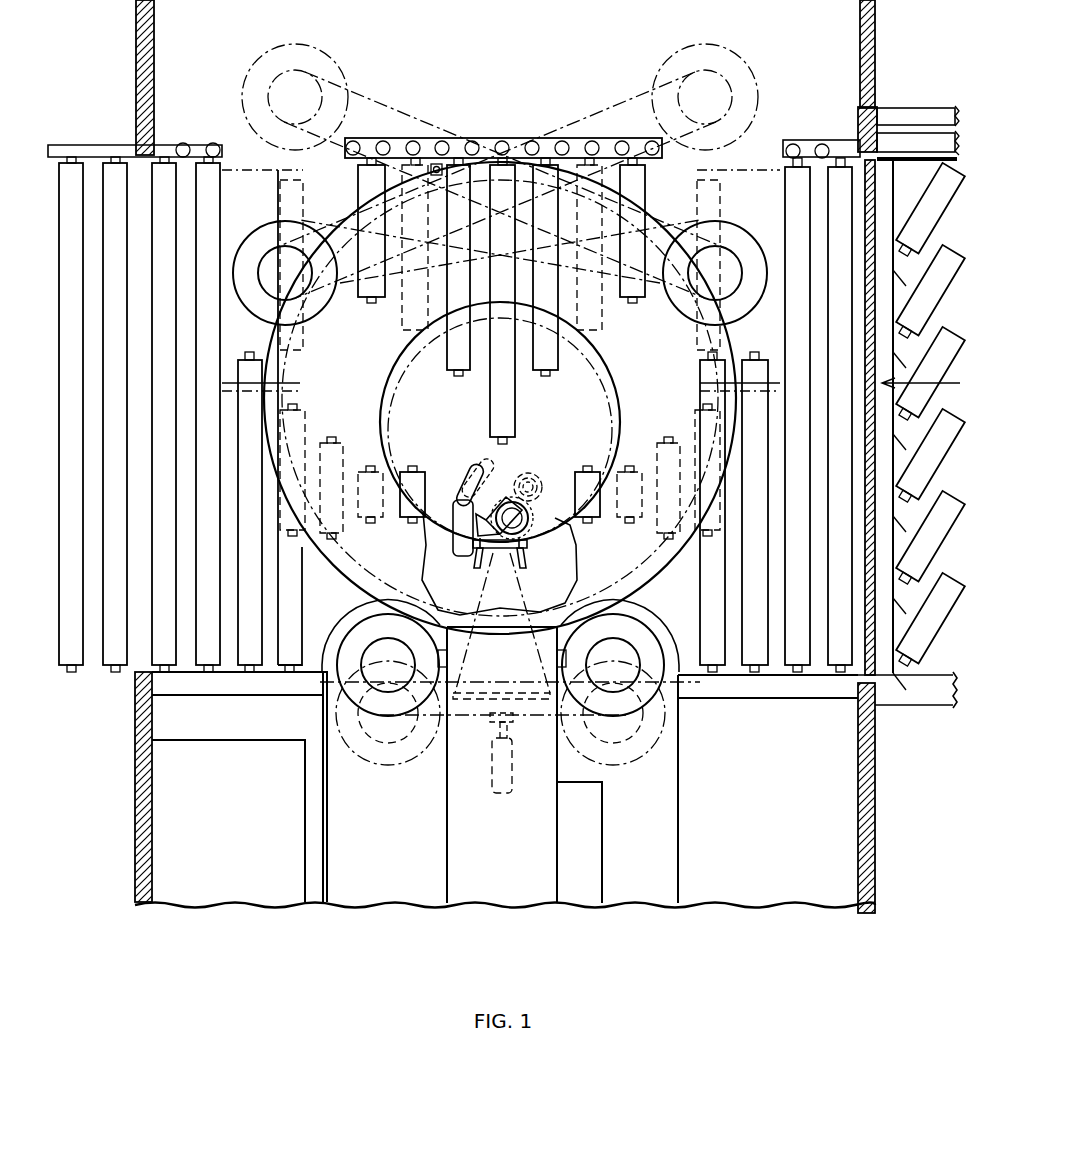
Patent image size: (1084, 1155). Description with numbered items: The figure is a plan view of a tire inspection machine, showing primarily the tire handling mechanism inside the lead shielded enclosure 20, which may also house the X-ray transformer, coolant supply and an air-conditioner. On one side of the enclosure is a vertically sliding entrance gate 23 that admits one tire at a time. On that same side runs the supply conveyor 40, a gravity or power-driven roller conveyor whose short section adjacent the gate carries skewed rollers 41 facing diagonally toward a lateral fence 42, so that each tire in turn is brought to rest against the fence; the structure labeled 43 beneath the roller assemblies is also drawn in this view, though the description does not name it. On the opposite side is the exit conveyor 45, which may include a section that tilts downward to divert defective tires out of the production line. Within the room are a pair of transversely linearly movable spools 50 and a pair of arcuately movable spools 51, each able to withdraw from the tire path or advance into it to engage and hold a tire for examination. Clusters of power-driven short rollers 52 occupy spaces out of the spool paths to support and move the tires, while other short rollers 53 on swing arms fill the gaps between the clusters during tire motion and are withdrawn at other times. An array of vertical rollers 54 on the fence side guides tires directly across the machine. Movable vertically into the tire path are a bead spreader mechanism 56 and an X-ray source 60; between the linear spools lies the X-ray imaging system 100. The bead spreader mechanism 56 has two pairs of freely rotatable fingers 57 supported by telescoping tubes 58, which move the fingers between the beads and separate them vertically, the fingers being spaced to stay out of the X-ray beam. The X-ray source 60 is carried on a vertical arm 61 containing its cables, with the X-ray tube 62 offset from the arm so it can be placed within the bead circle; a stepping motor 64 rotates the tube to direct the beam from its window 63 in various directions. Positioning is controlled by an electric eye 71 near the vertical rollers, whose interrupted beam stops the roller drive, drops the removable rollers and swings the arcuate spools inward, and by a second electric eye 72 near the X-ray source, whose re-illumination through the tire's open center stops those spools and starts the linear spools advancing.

The lead shielded enclosure 20 is at (136, 22).
The entrance gate 23 is at (873, 645).
The supply conveyor 40 is at (917, 75).
The skewed rollers 41 is at (927, 642).
The lateral fence 42 is at (887, 143).
The support box 43 is at (310, 675).
The exit conveyor 45 is at (97, 123).
The linearly movable spools 50 is at (383, 722).
The arcuately movable spools 51 is at (268, 228).
The short rollers 52 is at (600, 190).
The short rollers on swing arms 53 is at (305, 193).
The vertical rollers 54 is at (372, 141).
The bead spreader mechanism 56 is at (528, 546).
The fingers 57 is at (524, 564).
The telescoping tubes 58 is at (538, 484).
The X-ray source 60 is at (460, 553).
The vertical arm 61 is at (462, 500).
The X-ray tube 62 is at (488, 560).
The window 63 is at (513, 560).
The stepping motor 64 is at (498, 495).
The electric eye 71 is at (435, 163).
The electric eye 72 is at (530, 522).
The X-ray imaging system 100 is at (472, 700).